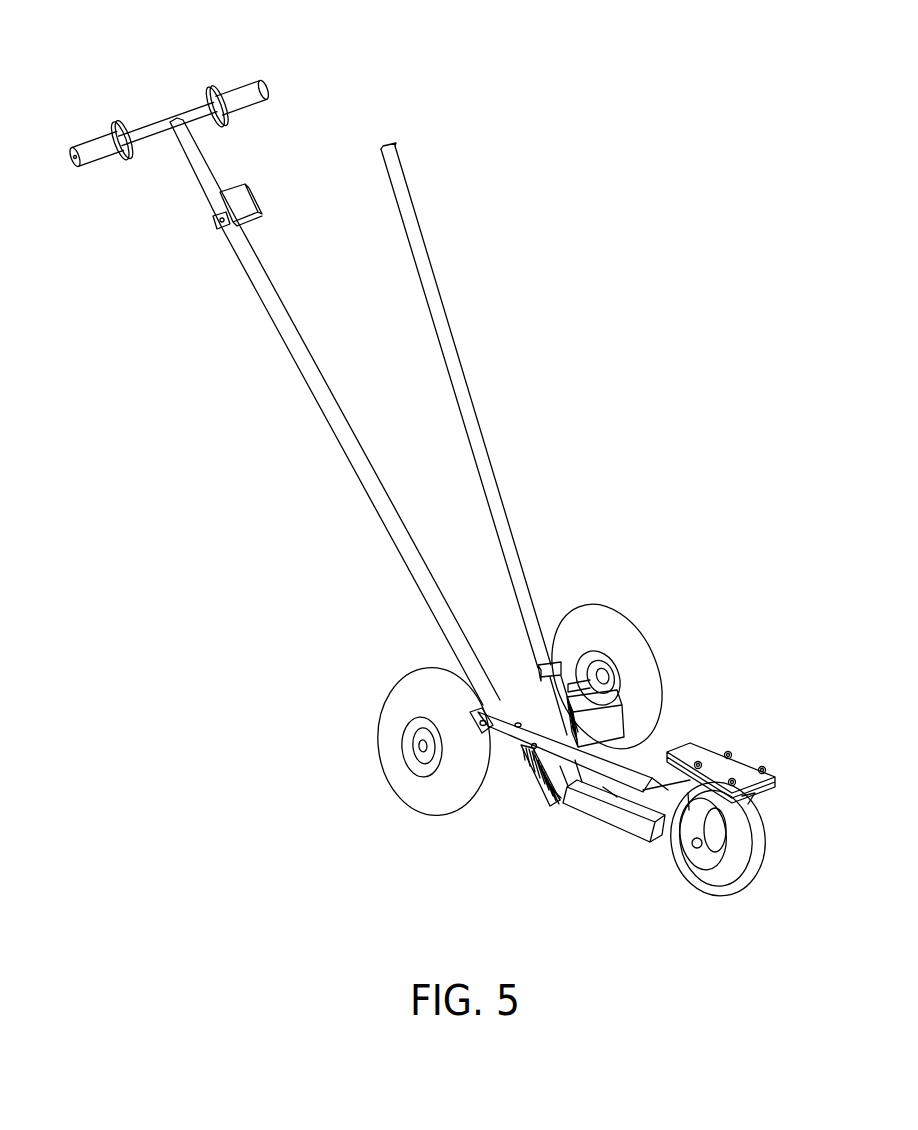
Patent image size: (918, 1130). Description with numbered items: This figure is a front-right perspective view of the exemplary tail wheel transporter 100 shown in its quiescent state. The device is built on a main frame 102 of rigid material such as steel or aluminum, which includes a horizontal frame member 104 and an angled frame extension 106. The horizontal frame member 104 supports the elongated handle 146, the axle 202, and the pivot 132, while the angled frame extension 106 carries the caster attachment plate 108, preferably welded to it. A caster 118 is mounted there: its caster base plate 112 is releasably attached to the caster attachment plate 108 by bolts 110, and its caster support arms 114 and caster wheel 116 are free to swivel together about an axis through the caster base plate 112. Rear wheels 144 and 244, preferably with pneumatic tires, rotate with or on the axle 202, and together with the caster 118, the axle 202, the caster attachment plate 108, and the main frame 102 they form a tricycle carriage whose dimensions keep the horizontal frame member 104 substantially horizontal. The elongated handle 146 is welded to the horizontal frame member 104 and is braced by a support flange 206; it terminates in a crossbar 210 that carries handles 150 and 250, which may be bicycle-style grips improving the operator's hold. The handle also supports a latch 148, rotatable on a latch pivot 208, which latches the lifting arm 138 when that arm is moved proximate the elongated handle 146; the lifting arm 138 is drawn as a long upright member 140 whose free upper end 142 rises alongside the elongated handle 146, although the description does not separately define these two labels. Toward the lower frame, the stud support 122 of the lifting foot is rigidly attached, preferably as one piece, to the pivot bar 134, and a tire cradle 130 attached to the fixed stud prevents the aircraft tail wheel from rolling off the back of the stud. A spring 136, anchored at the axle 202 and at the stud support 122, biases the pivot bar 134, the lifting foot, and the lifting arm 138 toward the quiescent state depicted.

The tail wheel transporter 100 is at (553, 69).
The main frame 102 is at (656, 746).
The horizontal frame member 104 is at (503, 733).
The angled frame extension 106 is at (663, 770).
The caster attachment plate 108 is at (702, 750).
The bolts 110 is at (764, 768).
The caster base plate 112 is at (770, 784).
The caster support arms 114 is at (702, 828).
The caster wheel 116 is at (767, 862).
The caster 118 is at (703, 912).
The stud support 122 is at (603, 817).
The tire cradle 130 is at (602, 723).
The pivot 132 is at (537, 753).
The pivot bar 134 is at (527, 676).
The spring 136 is at (518, 757).
The lifting arm 138 is at (500, 288).
The upright post 140 is at (482, 432).
The post upper end 142 is at (395, 168).
The rear wheel 144 is at (643, 645).
The elongated handle 146 is at (276, 308).
The latch 148 is at (238, 192).
The handle 150 is at (249, 86).
The axle 202 is at (522, 705).
The support flange 206 is at (478, 700).
The latch pivot 208 is at (223, 222).
The crossbar 210 is at (186, 114).
The rear wheel 244 is at (405, 780).
The handle 250 is at (98, 147).